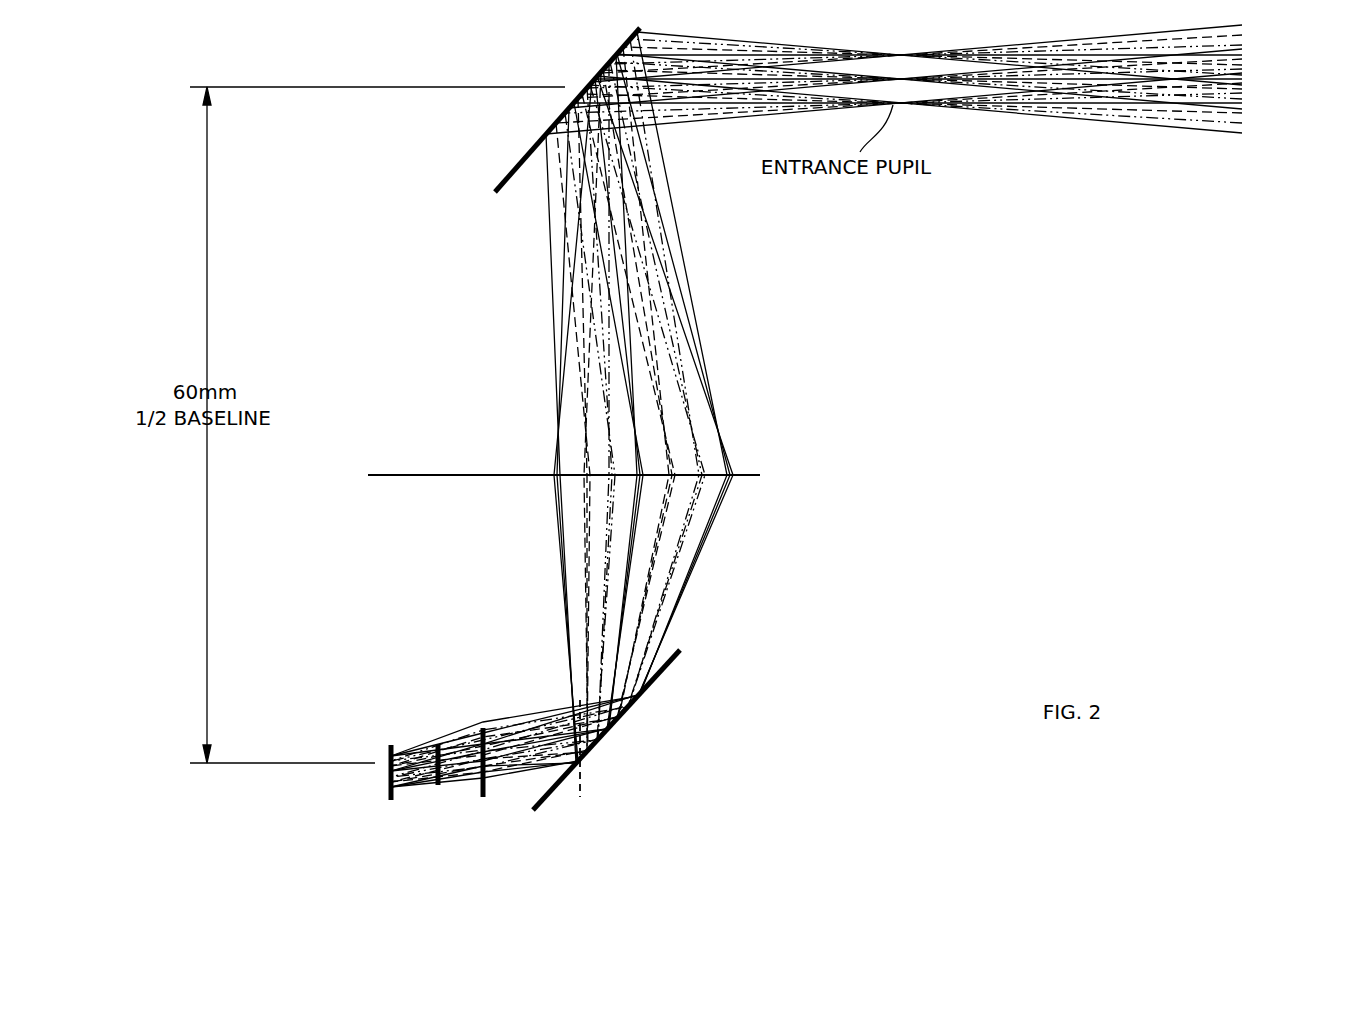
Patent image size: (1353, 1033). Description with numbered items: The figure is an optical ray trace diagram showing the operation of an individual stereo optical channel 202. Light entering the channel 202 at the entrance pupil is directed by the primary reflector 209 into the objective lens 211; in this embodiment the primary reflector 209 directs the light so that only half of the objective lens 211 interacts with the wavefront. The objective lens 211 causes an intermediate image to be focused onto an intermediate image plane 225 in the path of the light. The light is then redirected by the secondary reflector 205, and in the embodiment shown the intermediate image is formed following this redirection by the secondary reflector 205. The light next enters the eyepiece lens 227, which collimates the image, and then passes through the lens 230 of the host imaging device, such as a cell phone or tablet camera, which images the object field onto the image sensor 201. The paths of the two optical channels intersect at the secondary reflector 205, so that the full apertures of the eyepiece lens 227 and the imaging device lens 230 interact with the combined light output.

The image sensor 201 is at (388, 793).
The optical channel 202 is at (1233, 153).
The secondary reflector 205 is at (683, 652).
The primary reflector 209 is at (507, 177).
The objective lens 211 is at (747, 475).
The intermediate image plane 225 is at (583, 771).
The eyepiece lens 227 is at (483, 728).
The lens of the host imaging device 230 is at (438, 745).